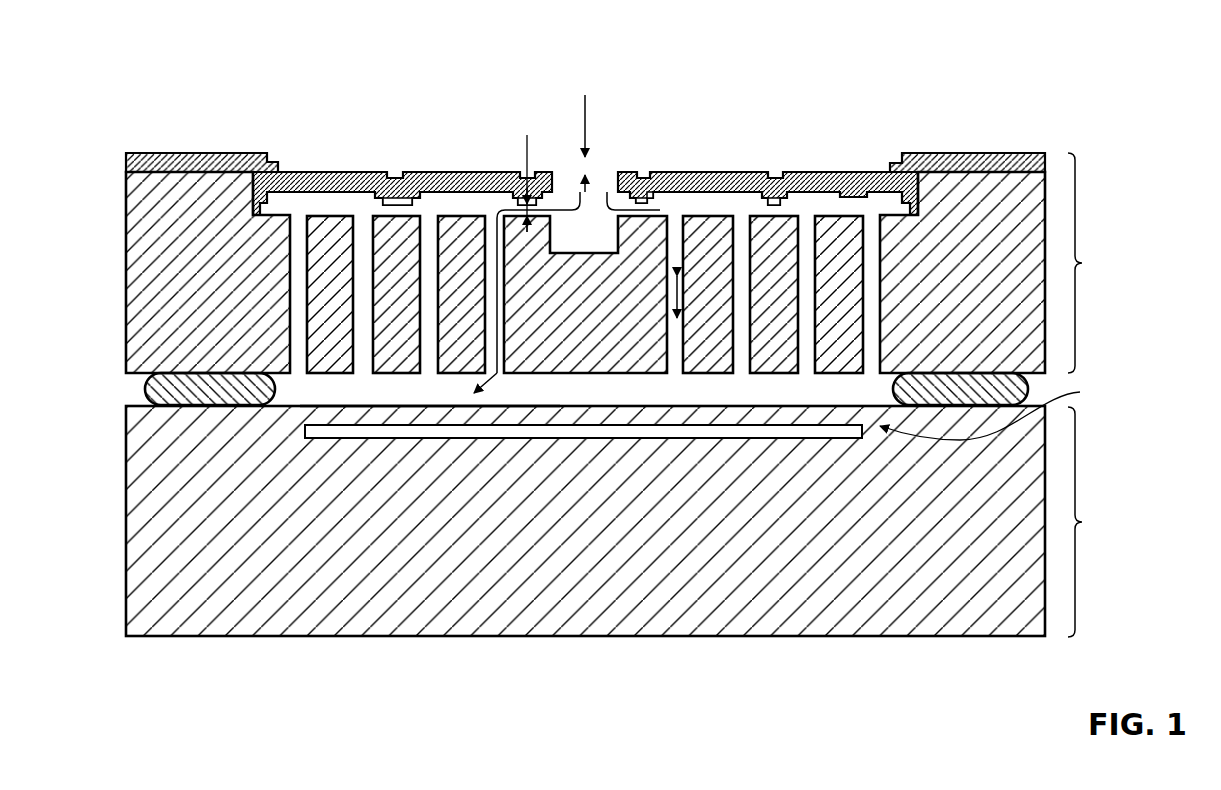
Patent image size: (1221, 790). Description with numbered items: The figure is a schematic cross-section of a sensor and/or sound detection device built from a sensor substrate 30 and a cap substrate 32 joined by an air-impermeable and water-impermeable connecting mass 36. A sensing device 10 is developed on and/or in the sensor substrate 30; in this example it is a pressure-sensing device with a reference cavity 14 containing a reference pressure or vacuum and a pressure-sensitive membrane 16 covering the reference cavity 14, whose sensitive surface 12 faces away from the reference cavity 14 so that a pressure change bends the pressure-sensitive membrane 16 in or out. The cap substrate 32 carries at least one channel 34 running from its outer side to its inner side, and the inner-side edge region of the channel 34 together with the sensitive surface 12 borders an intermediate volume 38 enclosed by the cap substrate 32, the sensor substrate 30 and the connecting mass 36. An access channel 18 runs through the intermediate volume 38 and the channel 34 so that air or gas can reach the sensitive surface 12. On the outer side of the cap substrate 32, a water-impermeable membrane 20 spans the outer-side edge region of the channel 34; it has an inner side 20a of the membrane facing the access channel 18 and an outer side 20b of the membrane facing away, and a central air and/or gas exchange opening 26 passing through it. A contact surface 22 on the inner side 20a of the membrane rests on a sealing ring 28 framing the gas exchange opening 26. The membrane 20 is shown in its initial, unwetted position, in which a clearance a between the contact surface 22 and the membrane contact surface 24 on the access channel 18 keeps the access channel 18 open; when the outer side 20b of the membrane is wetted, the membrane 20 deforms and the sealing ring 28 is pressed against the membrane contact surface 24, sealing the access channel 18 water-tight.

The sensing device 10 is at (1000, 410).
The sensitive surface 12 is at (383, 405).
The reference cavity 14 is at (590, 428).
The pressure-sensitive membrane 16 is at (487, 412).
The access channel 18 is at (490, 267).
The membrane 20 is at (750, 172).
The inner side of the membrane 20a is at (868, 172).
The outer side of the membrane 20b is at (703, 172).
The contact surface 22 is at (380, 172).
The membrane contact surface 24 is at (660, 195).
The air and/or gas exchange opening 26 is at (585, 95).
The sealing ring 28 is at (655, 208).
The sensor substrate 30 is at (622, 521).
The cap substrate 32 is at (622, 263).
The channel 34 is at (680, 300).
The connecting mass 36 is at (172, 390).
The intermediate volume 38 is at (602, 404).
The clearance a is at (527, 135).